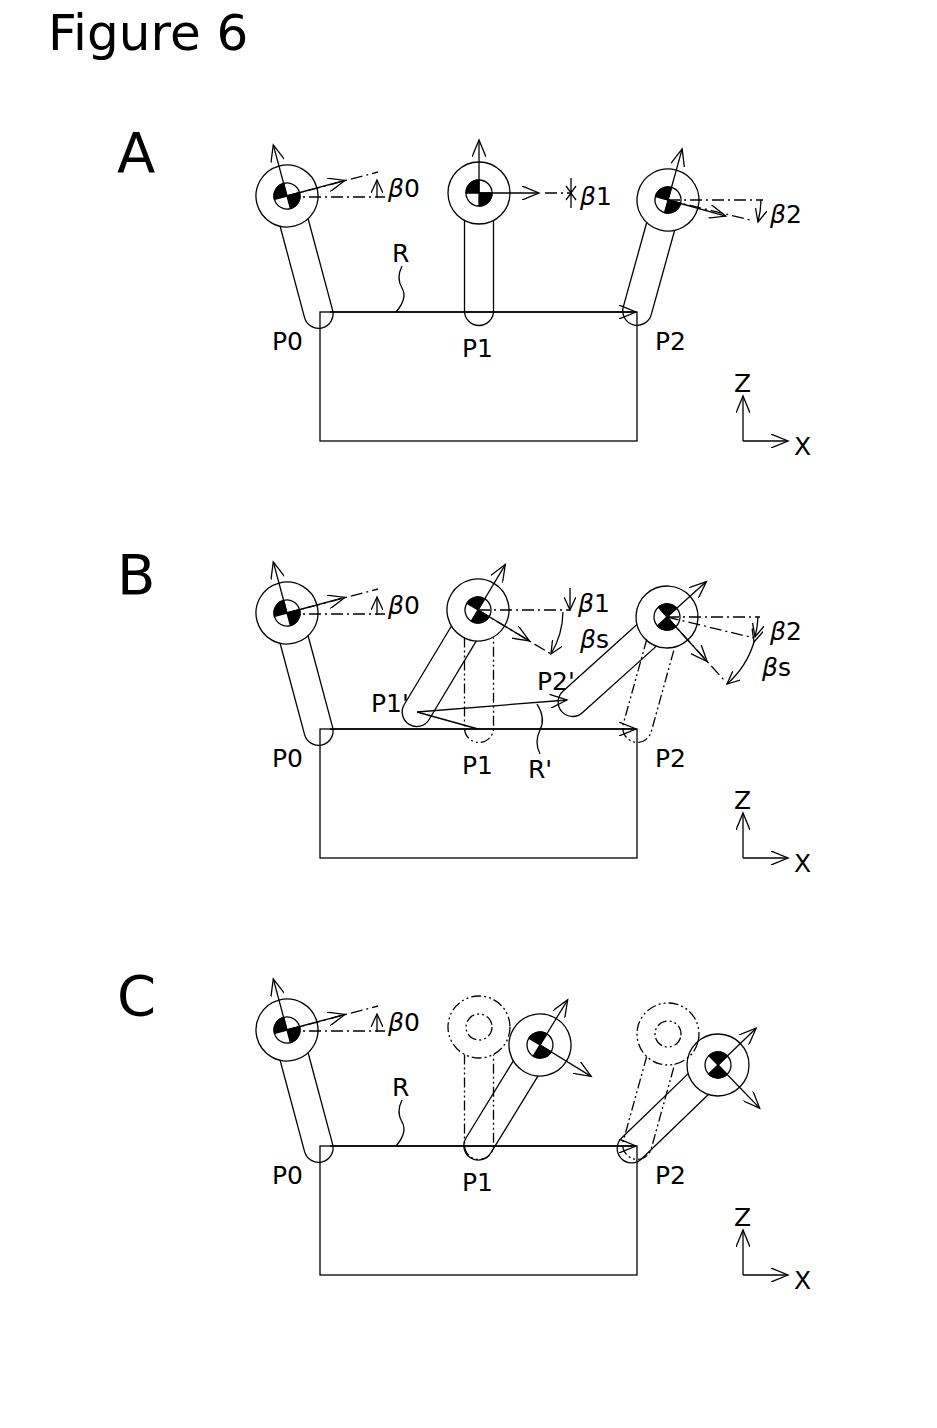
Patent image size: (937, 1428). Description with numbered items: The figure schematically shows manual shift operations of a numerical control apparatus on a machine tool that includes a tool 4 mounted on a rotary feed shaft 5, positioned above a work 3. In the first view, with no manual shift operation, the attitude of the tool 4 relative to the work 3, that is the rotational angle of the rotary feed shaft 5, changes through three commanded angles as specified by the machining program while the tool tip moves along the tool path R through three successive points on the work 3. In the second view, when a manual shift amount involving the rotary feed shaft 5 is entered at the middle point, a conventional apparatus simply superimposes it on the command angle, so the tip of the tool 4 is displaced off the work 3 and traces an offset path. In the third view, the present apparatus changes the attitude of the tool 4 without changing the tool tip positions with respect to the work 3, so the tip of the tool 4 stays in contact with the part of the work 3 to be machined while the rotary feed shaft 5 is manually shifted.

In FIG. 6A, the work 3 is at (320, 404).
In FIG. 6B, the work 3 is at (320, 821).
In FIG. 6C, the work 3 is at (320, 1238).
In FIG. 6A, the tool 4 is at (297, 269).
In FIG. 6B, the tool 4 is at (297, 686).
In FIG. 6C, the tool 4 is at (297, 1103).
In FIG. 6A, the rotary feed shaft 5 is at (269, 205).
In FIG. 6B, the rotary feed shaft 5 is at (269, 622).
In FIG. 6C, the rotary feed shaft 5 is at (269, 1039).